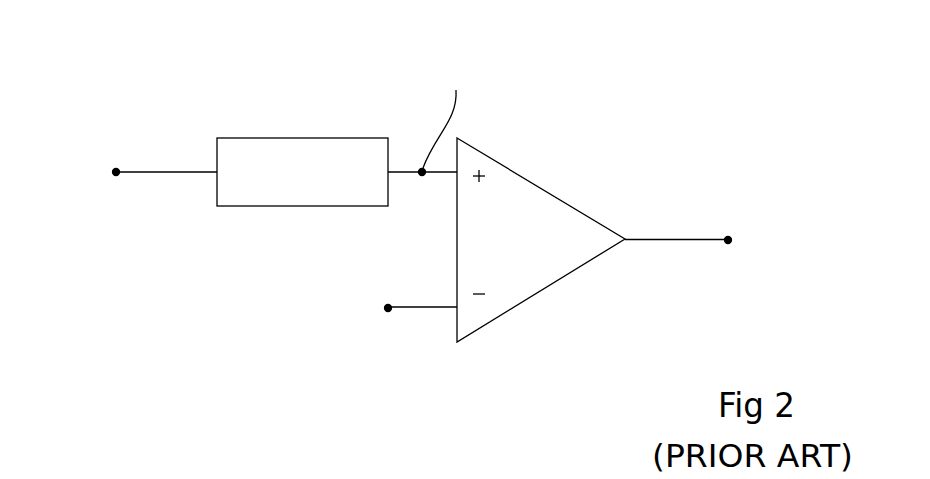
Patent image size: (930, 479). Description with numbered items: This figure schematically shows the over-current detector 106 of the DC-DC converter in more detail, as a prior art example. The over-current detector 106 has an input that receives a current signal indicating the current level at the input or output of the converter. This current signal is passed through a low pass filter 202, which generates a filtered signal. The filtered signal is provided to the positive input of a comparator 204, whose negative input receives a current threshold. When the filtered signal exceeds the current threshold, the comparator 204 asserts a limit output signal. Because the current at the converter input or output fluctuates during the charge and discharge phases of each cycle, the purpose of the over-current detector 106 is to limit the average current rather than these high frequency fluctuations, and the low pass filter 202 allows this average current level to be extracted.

The over-current detector 106 is at (628, 86).
The low pass filter 202 is at (340, 146).
The comparator 204 is at (528, 196).